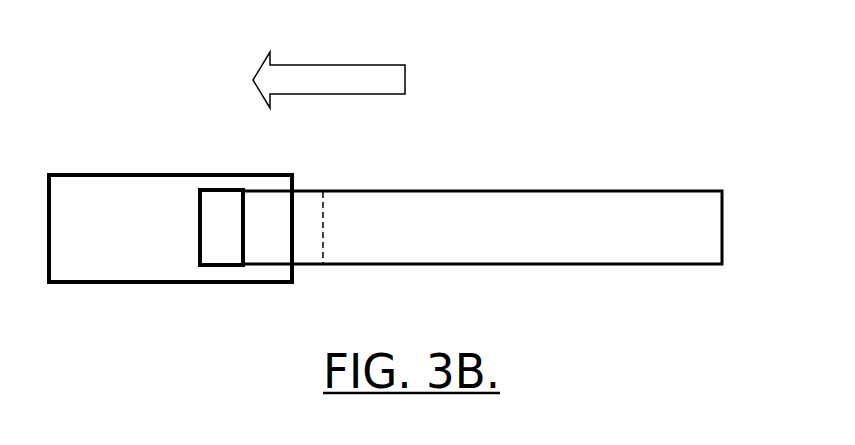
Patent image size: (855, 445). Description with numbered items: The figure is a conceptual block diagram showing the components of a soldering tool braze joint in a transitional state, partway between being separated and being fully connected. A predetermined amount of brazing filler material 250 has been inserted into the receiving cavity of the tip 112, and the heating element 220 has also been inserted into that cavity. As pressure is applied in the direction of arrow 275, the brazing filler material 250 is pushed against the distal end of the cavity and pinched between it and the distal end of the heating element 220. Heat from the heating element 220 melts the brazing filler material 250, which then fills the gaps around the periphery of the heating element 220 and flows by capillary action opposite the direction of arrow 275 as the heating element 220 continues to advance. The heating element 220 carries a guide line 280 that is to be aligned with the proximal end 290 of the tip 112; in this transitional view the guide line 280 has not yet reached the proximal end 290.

The tip 112 is at (170, 199).
The heating element 220 is at (482, 198).
The brazing filler material 250 is at (258, 202).
The arrow 275 is at (345, 65).
The guide line 280 is at (366, 209).
The proximal end 290 is at (372, 302).